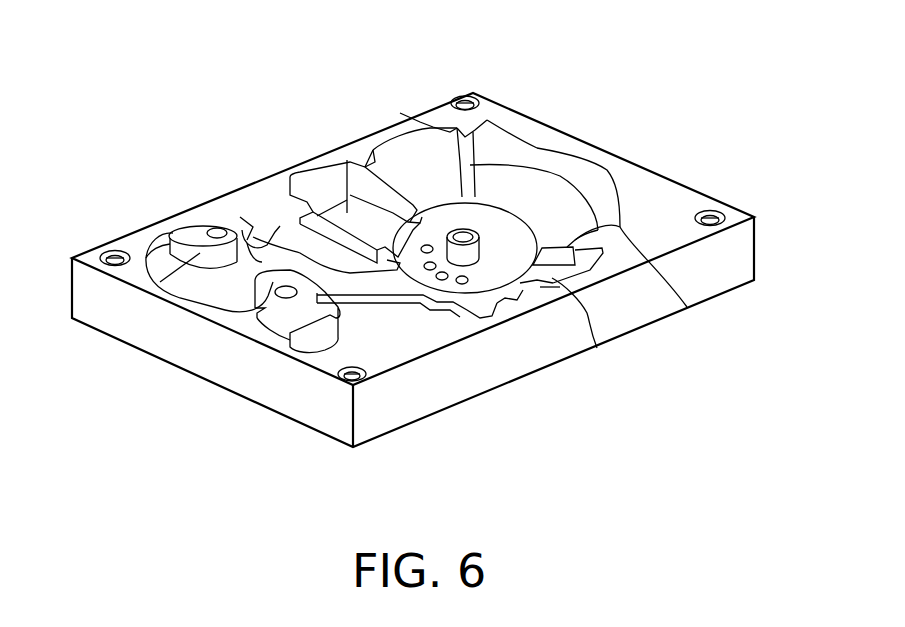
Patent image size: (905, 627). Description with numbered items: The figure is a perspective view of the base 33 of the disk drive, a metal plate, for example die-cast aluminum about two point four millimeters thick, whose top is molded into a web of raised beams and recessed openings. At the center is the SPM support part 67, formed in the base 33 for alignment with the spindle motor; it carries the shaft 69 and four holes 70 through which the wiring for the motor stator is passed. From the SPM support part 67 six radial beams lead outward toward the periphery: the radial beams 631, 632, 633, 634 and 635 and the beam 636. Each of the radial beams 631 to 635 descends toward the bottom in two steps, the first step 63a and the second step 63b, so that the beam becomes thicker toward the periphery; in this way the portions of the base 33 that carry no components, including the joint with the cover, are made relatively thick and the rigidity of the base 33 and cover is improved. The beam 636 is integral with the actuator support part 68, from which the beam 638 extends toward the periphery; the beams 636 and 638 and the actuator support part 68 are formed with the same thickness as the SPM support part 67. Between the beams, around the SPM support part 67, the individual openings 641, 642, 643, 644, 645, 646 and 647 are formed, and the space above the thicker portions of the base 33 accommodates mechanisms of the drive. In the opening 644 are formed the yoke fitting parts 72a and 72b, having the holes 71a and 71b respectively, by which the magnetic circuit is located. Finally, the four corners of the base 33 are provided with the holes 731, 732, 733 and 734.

The base 33 is at (153, 56).
The radial beam 631 is at (300, 210).
The opening 646 is at (335, 218).
The radial beam 632 is at (420, 202).
The opening 647 is at (432, 170).
The hole 731 is at (478, 92).
The first step 63a is at (482, 123).
The radial beam 633 is at (467, 197).
The second step 63b is at (528, 222).
The SPM support part 67 is at (519, 228).
The radial beam 634 is at (590, 228).
The hole 732 is at (727, 204).
The opening 645 is at (300, 253).
The beam 638 is at (245, 238).
The hole 71a is at (217, 227).
The yoke fitting part 72a is at (170, 265).
The hole 734 is at (85, 268).
The opening 644 is at (195, 290).
The actuator support part 68 is at (267, 275).
The hole 71b is at (285, 300).
The yoke fitting part 72b is at (317, 350).
The hole 733 is at (340, 376).
The opening 643 is at (373, 378).
The beam 636 is at (397, 285).
The holes 70 is at (453, 288).
The radial beam 635 is at (497, 303).
The shaft 69 is at (523, 285).
The opening 642 is at (597, 348).
The opening 641 is at (687, 307).